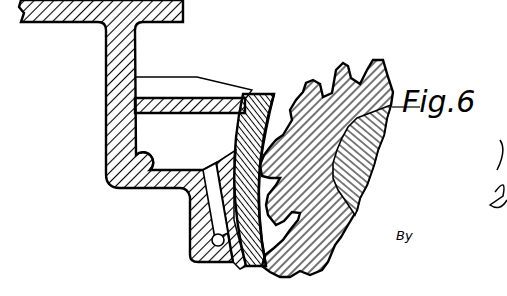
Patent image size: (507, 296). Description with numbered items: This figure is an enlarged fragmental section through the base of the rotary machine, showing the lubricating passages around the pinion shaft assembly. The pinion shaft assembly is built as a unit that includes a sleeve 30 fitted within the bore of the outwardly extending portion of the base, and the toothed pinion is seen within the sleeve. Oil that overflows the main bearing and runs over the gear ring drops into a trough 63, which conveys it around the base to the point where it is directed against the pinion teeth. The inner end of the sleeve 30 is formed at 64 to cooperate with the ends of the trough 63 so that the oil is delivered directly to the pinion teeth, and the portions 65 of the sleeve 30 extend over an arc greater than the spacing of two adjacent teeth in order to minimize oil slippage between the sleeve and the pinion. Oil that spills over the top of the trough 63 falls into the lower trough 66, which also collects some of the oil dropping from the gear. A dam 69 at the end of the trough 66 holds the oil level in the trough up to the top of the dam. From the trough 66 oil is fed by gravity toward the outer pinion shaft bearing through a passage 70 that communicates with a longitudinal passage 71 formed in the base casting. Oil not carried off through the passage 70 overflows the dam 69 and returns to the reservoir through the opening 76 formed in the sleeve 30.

The sleeve 30 is at (252, 225).
The trough 63 is at (177, 97).
The inner end of the sleeve 64 is at (262, 108).
The portions of the sleeve 65 is at (275, 126).
The lower trough 66 is at (133, 159).
The dam 69 is at (216, 161).
The passage 70 is at (210, 199).
The longitudinal passage 71 is at (212, 240).
The opening 76 is at (389, 70).